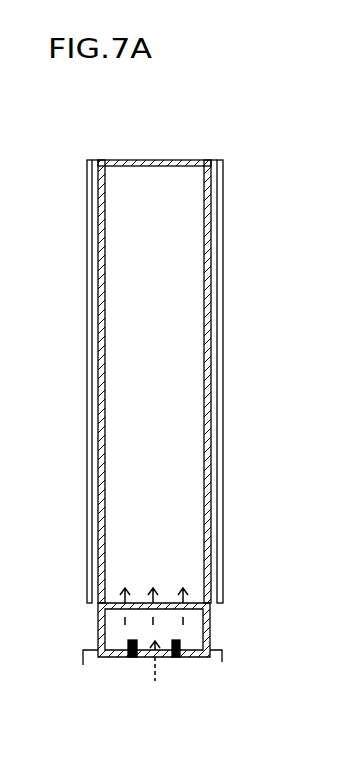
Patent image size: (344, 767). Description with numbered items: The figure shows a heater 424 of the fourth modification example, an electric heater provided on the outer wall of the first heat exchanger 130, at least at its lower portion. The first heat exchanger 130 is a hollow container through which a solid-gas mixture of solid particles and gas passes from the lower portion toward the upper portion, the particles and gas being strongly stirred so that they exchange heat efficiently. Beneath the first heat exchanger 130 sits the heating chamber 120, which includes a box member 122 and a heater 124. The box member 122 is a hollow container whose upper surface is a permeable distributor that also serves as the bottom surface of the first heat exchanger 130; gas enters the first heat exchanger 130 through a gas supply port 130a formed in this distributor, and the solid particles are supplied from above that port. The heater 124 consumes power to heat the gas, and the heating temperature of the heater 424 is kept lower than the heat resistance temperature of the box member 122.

The heater 424 is at (88, 313).
The first heat exchanger 130 is at (120, 160).
The gas supply port 130a is at (153, 603).
The heating chamber 120 is at (243, 633).
The box member 122 is at (122, 657).
The heater 124 is at (82, 666).